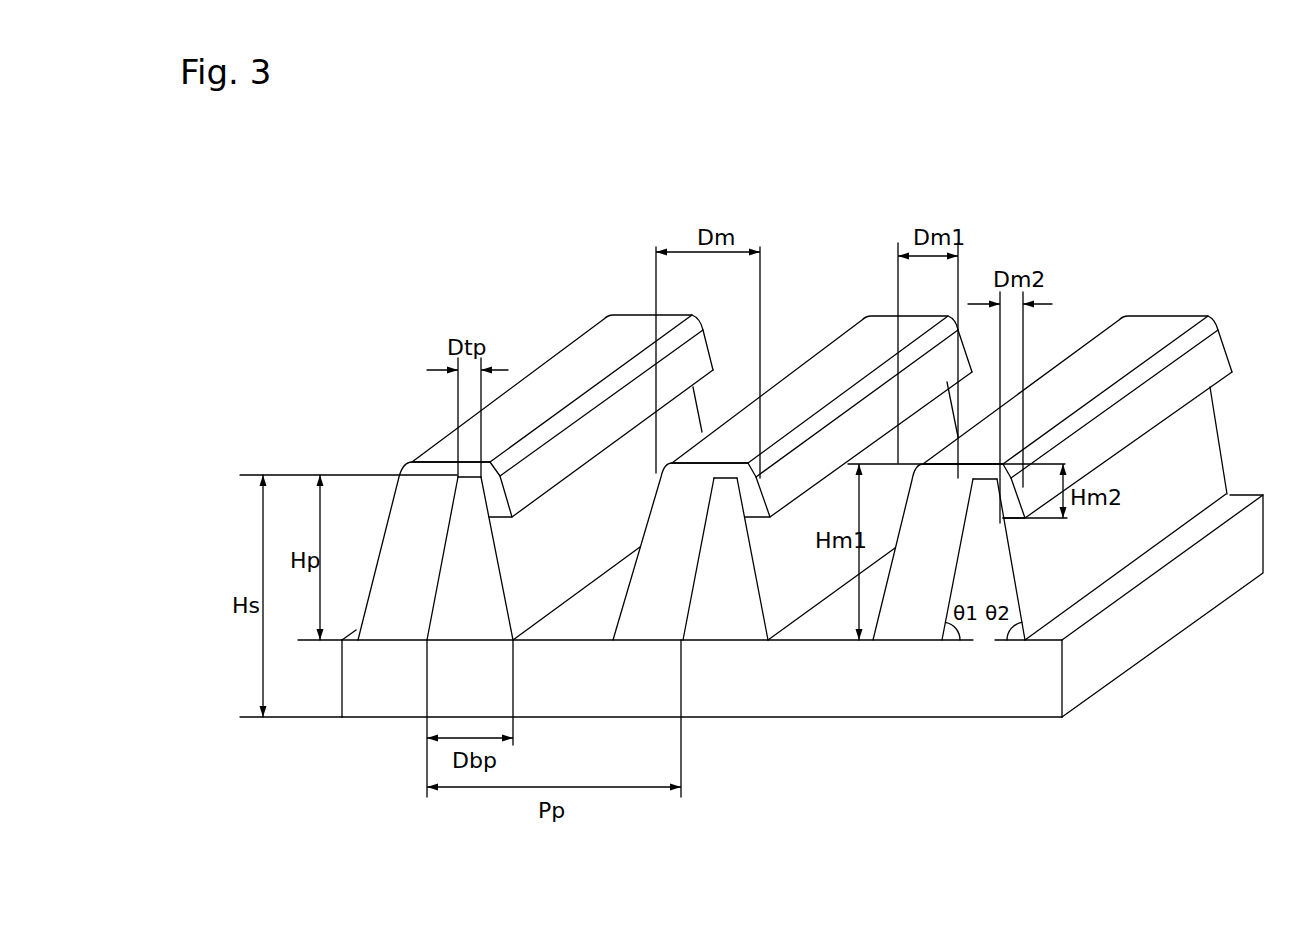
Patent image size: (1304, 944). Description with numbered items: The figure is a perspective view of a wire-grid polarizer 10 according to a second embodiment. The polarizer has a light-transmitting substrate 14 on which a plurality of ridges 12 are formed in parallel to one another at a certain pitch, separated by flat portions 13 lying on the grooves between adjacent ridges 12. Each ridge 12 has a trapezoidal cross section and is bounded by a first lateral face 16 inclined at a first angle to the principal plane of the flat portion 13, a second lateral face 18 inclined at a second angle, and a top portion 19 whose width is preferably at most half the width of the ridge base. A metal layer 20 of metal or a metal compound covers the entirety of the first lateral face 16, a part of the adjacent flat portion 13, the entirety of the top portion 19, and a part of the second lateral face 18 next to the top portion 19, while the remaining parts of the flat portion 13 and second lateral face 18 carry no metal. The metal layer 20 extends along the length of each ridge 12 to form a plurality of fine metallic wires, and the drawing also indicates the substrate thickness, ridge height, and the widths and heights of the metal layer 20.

The wire-grid polarizer 10 is at (598, 264).
The ridge 12 is at (742, 588).
The flat portion 13 is at (832, 643).
The light-transmitting substrate 14 is at (735, 707).
The first lateral face 16 is at (693, 578).
The second lateral face 18 is at (760, 563).
The top portion 19 is at (720, 478).
The metal layer 20 is at (443, 437).